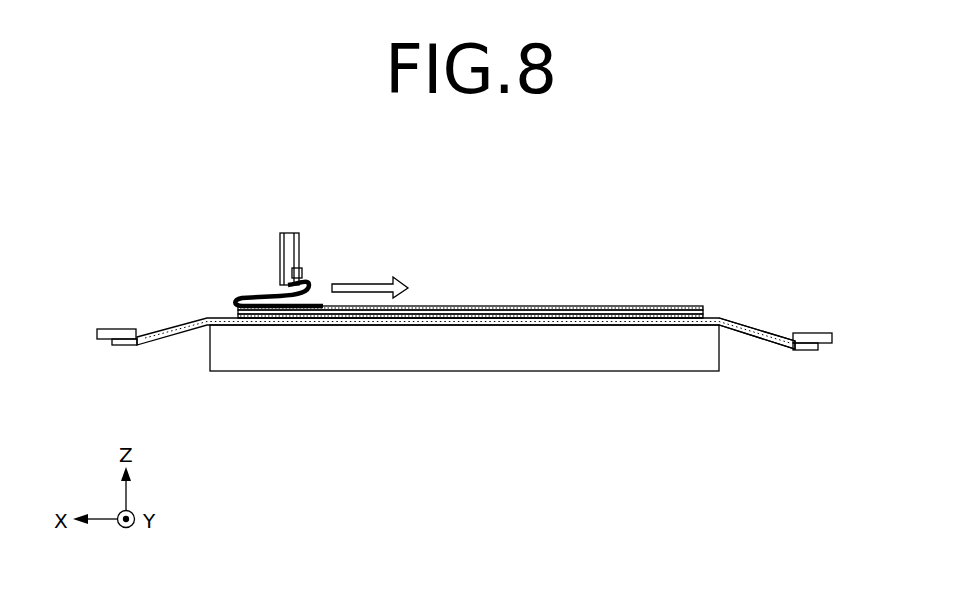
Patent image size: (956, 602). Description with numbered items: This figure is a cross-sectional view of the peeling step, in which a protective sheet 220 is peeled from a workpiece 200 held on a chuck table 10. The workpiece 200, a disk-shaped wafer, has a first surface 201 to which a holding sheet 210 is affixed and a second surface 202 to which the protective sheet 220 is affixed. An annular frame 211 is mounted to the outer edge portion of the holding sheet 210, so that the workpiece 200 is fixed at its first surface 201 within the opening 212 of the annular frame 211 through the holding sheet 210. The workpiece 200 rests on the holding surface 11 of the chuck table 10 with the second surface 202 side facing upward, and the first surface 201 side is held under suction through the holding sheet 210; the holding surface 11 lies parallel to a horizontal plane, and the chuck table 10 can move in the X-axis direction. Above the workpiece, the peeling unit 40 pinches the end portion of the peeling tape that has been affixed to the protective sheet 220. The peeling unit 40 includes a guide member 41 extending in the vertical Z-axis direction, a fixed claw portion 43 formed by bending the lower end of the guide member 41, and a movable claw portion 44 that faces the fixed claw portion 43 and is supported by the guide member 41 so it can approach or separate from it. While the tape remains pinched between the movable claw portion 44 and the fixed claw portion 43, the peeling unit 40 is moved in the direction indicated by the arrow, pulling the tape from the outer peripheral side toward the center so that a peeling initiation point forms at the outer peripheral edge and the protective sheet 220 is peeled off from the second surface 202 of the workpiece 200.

The chuck table 10 is at (512, 360).
The holding surface 11 is at (560, 318).
The annular frame 211 is at (105, 340).
The opening 212 is at (785, 333).
The workpiece 200 is at (511, 327).
The protective sheet 220 is at (605, 309).
The second surface 202 is at (663, 314).
The holding sheet 210 is at (608, 325).
The first surface 201 is at (667, 322).
The peeling unit 40 is at (309, 225).
The guide member 41 is at (280, 238).
The fixed claw portion 43 is at (277, 288).
The movable claw portion 44 is at (307, 270).